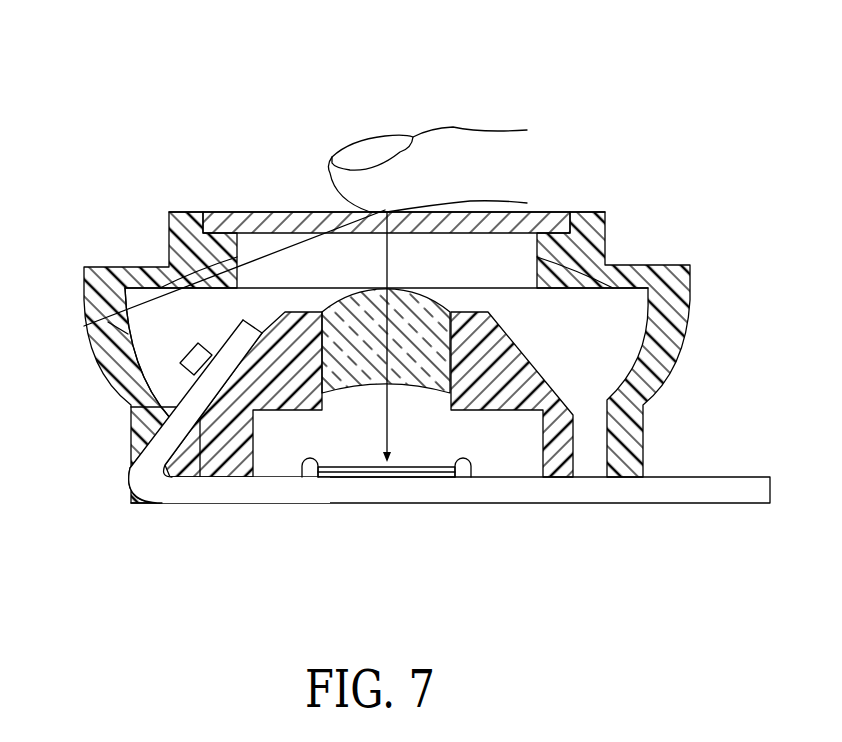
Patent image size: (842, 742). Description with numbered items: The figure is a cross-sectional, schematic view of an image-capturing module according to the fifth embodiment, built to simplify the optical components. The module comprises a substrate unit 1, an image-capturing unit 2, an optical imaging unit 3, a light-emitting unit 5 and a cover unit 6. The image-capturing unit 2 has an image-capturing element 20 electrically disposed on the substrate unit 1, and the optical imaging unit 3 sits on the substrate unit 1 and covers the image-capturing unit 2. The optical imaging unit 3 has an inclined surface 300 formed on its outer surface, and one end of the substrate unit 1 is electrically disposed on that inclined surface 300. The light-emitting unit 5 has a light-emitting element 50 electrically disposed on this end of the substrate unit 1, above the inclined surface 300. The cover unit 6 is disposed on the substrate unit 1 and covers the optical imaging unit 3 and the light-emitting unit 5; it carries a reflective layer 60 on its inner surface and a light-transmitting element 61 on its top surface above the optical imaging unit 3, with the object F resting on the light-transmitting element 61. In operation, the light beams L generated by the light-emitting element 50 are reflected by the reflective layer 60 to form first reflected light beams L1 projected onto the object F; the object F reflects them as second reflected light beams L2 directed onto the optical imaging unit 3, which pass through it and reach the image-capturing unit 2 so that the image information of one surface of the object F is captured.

The substrate unit 1 is at (741, 468).
The image-capturing unit 2 is at (416, 473).
The optical imaging unit 3 is at (528, 397).
The light-emitting unit 5 is at (178, 363).
The cover unit 6 is at (92, 257).
The image-capturing element 20 is at (346, 478).
The light-emitting element 50 is at (212, 353).
The reflective layer 60 is at (137, 287).
The light-transmitting element 61 is at (234, 226).
The inclined surface 300 is at (248, 372).
The light beams L is at (128, 334).
The first reflected light beams L1 is at (293, 245).
The second reflected light beams L2 is at (387, 258).
The object F is at (467, 116).